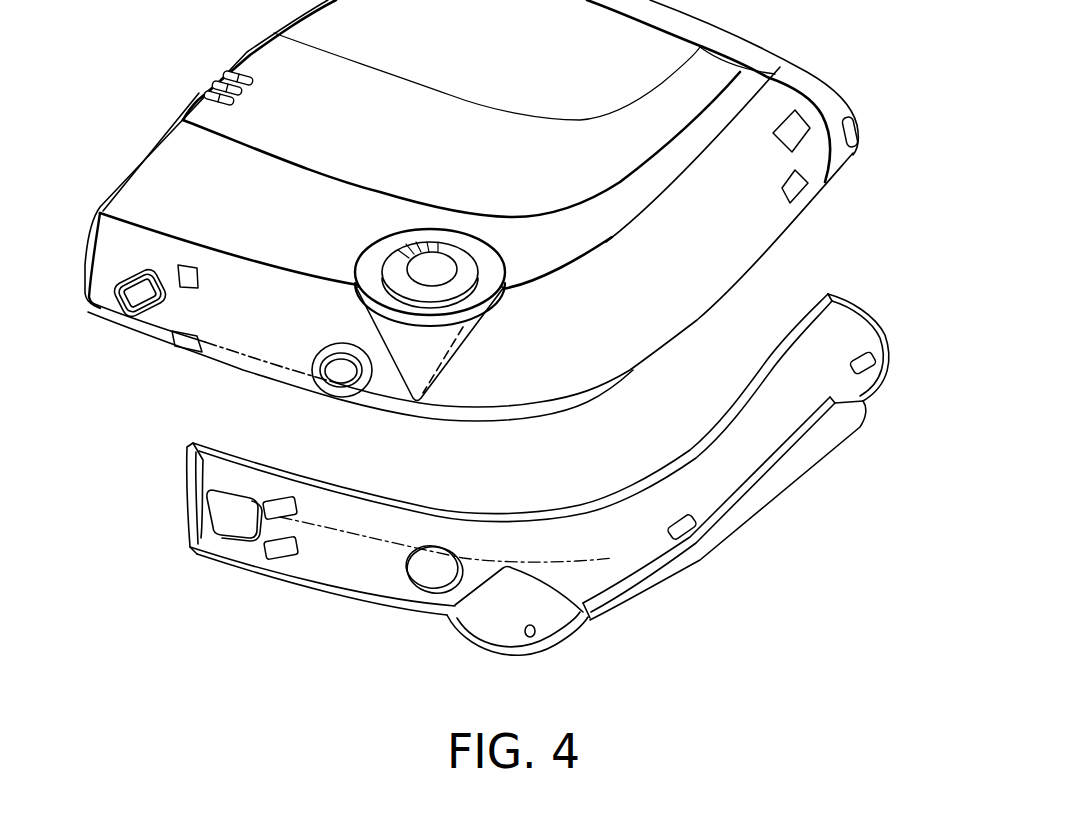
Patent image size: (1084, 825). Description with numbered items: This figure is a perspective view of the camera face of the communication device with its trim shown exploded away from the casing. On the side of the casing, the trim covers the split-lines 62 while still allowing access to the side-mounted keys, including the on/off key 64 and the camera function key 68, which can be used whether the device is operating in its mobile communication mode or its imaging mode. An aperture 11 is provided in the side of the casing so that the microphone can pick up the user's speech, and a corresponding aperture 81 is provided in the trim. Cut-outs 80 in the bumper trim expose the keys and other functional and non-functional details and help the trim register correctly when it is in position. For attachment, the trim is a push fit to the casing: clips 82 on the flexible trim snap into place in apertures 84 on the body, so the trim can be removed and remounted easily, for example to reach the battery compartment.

The aperture 11 is at (795, 128).
The split-lines 62 is at (92, 303).
The on/off key 64 is at (138, 300).
The camera function key 68 is at (338, 378).
The cut-outs 80 is at (225, 522).
The aperture 81 is at (864, 404).
The clips 82 is at (297, 507).
The apertures 84 is at (193, 270).